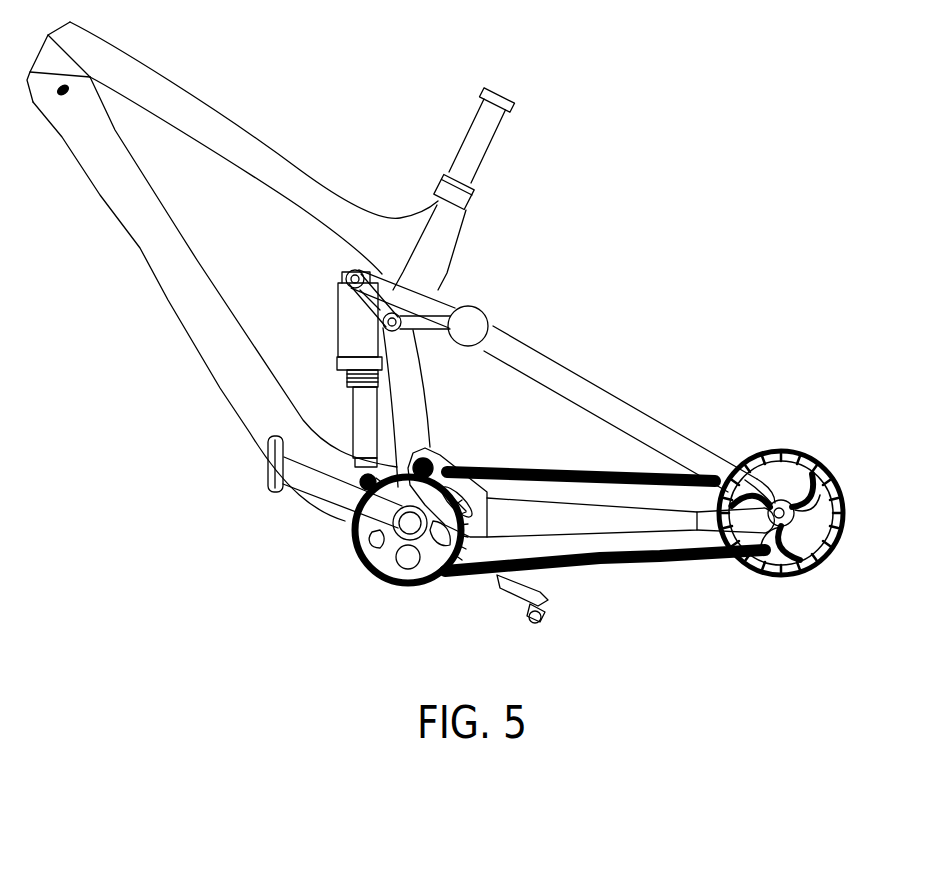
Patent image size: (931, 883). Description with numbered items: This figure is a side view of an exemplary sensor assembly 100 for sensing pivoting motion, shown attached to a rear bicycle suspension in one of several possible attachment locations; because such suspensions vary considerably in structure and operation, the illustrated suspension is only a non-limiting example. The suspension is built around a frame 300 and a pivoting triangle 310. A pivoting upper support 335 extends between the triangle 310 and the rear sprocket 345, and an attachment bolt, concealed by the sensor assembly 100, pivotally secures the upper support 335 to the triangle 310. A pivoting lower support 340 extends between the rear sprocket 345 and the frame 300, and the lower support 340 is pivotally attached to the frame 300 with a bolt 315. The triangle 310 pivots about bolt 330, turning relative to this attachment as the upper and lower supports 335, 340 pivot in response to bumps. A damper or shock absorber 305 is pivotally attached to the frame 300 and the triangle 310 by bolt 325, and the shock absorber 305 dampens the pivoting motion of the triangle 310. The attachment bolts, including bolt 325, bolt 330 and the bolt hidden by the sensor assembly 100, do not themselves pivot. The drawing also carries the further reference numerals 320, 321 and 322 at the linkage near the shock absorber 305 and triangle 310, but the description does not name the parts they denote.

The sensor assembly 100 is at (480, 305).
The frame 300 is at (290, 150).
The shock absorber 305 is at (337, 335).
The triangle 310 is at (447, 273).
The bolt 315 is at (430, 458).
The lower rocker pivot 320 is at (403, 347).
The rocker link arm 321 is at (395, 275).
The shock pivot 322 is at (343, 295).
The bolt 325 is at (347, 270).
The bolt 330 is at (422, 352).
The upper support 335 is at (507, 333).
The lower support 340 is at (608, 522).
The rear sprocket 345 is at (778, 447).